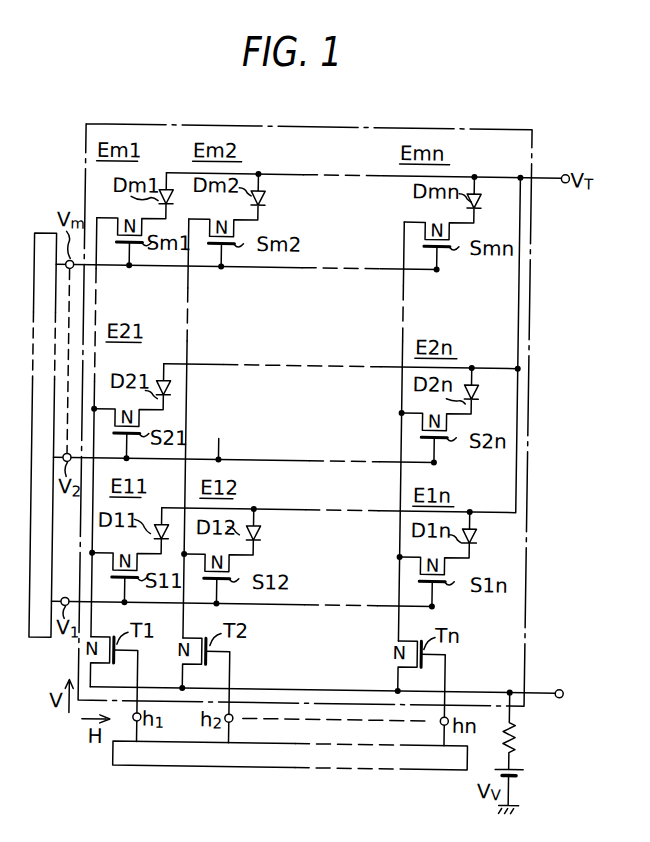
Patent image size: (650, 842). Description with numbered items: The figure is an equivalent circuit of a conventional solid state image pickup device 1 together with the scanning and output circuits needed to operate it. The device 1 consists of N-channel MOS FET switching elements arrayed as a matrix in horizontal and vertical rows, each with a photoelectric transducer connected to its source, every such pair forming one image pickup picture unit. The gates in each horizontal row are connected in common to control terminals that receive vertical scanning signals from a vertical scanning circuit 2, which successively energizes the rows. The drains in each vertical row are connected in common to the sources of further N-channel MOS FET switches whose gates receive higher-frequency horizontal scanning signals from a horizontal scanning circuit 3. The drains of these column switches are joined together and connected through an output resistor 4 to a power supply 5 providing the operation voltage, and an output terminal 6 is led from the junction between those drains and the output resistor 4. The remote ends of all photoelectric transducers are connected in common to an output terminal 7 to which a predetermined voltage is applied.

The solid state image pickup device 1 is at (214, 114).
The vertical scanning circuit 2 is at (44, 236).
The horizontal scanning circuit 3 is at (171, 769).
The output resistor 4 is at (522, 736).
The power supply 5 is at (529, 771).
The output terminal 6 is at (562, 687).
The output terminal 7 is at (560, 171).